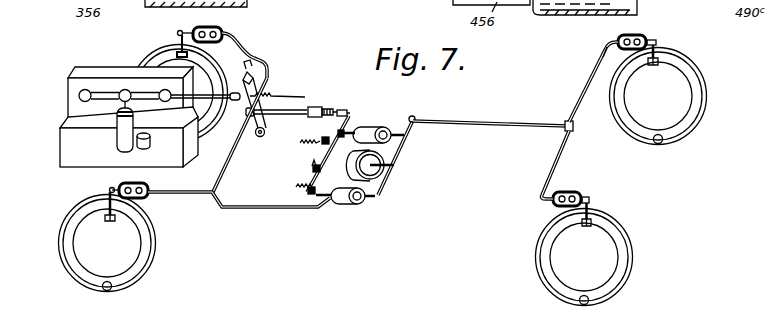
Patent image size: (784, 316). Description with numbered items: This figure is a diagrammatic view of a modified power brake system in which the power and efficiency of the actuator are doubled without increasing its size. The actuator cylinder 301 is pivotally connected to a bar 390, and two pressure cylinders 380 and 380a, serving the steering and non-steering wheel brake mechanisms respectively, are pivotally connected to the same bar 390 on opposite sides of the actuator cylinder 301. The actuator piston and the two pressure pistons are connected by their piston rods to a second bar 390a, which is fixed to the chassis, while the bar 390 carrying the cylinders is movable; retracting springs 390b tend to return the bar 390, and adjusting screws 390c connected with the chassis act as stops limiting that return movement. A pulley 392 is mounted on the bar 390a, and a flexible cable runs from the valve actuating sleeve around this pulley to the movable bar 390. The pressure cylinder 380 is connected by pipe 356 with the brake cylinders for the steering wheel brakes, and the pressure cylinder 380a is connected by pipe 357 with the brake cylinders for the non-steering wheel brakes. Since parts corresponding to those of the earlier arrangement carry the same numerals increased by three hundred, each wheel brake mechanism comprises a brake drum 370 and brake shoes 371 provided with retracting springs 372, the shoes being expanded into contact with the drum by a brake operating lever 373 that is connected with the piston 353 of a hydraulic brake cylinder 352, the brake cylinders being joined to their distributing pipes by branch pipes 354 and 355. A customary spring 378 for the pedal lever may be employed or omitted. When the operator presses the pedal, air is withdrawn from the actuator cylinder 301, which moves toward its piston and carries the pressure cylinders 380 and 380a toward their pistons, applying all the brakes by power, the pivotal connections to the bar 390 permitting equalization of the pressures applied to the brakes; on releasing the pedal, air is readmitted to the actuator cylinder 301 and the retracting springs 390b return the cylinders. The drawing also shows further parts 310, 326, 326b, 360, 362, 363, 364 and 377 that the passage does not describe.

The actuator cylinder 301 is at (381, 192).
The plug connector 310 is at (324, 108).
The operating rod 326 is at (300, 107).
The lever arm 326b is at (232, 106).
The brake cylinder 352 is at (148, 188).
The piston 353 is at (615, 55).
The branch pipe 354 is at (230, 168).
The branch pipe 355 is at (585, 82).
The pipe 356 is at (262, 208).
The pipe 357 is at (490, 128).
The control box 360 is at (60, 143).
The control lever 362 is at (118, 88).
The knob 363 is at (146, 147).
The lever handle 364 is at (117, 142).
The brake drum 370 is at (155, 238).
The brake shoes 371 is at (73, 247).
The retracting springs 372 is at (387, 153).
The brake operating lever 373 is at (107, 193).
The pivot 377 is at (265, 133).
The spring 378 is at (282, 89).
The pressure cylinder 380 is at (345, 205).
The pressure cylinder 380a is at (378, 128).
The bar 390 is at (320, 202).
The bar 390a is at (385, 178).
The retracting springs 390b is at (300, 143).
The adjusting screws 390c is at (314, 163).
The pulley 392 is at (416, 120).